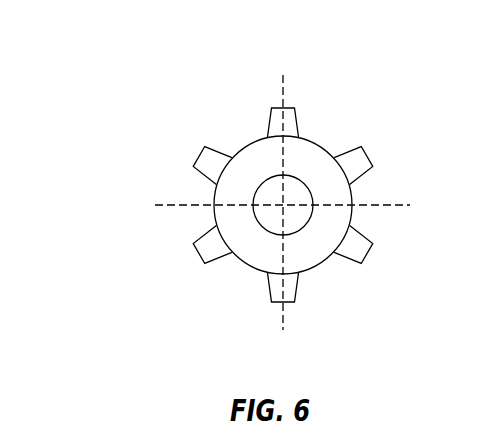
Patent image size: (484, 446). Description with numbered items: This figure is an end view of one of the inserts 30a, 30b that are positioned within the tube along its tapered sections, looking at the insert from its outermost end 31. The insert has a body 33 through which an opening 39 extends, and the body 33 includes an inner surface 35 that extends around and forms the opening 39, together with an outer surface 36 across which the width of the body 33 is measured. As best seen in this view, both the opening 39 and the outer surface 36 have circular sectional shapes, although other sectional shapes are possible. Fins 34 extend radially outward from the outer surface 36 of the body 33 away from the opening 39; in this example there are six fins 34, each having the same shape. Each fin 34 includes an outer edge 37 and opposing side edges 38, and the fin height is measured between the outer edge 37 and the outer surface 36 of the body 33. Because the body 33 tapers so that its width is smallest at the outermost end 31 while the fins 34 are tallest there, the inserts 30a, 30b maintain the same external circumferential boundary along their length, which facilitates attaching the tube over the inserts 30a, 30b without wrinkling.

The insert 30a is at (96, 178).
The insert 30b is at (238, 202).
The outermost end 31 is at (330, 213).
The body 33 is at (316, 160).
The fins 34 is at (210, 168).
The inner surface 35 is at (272, 182).
The outer surface 36 is at (230, 158).
The outer edge 37 is at (203, 150).
The side edges 38 is at (216, 171).
The opening 39 is at (302, 198).